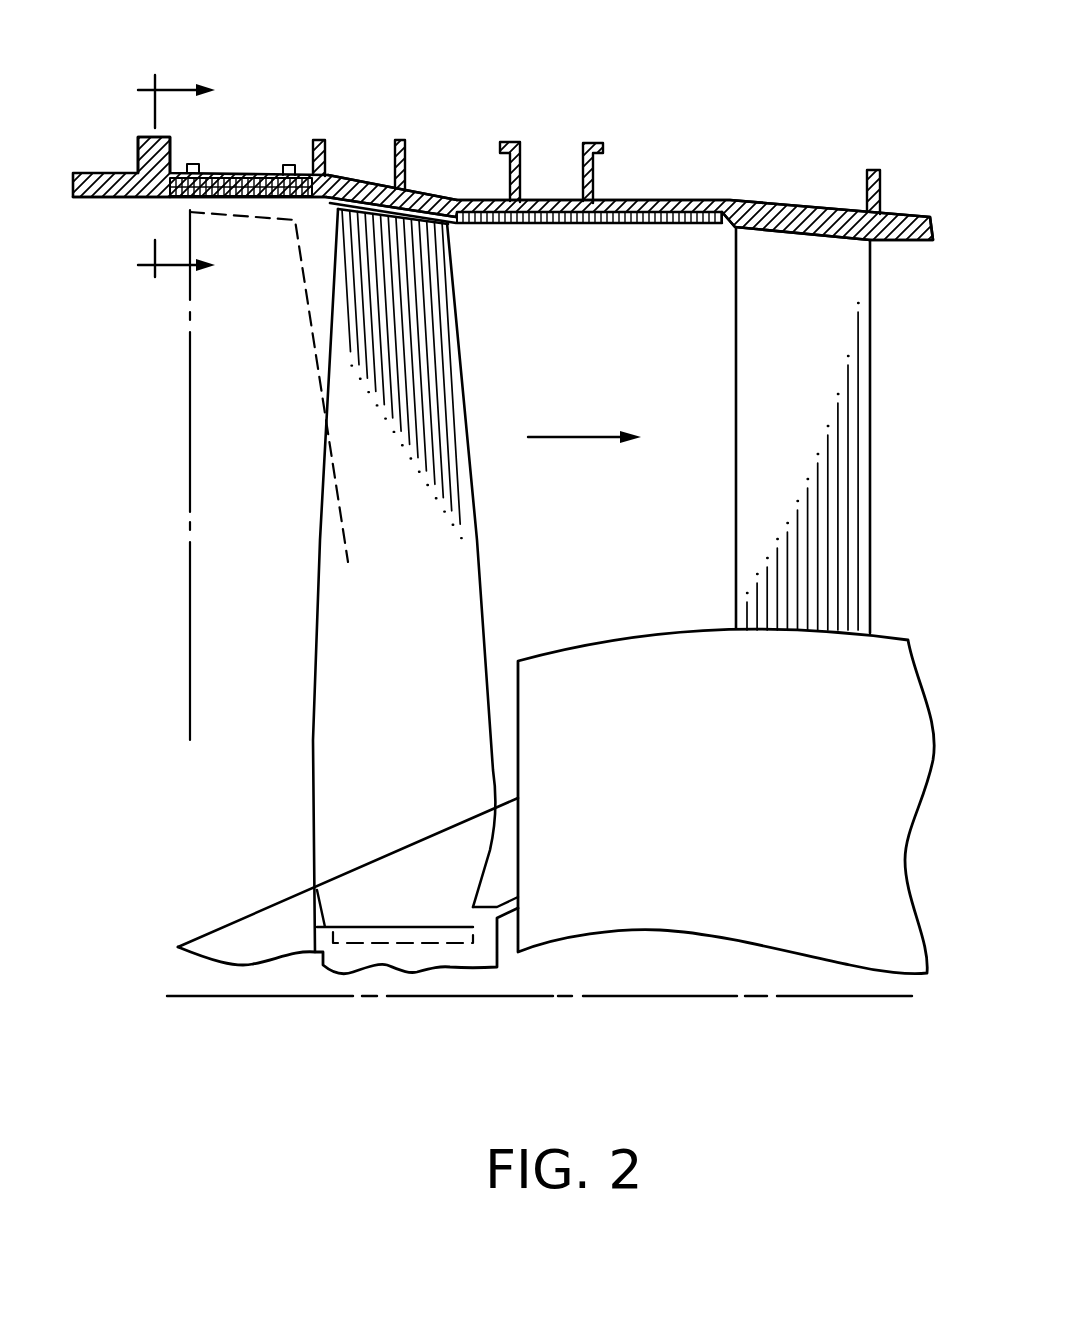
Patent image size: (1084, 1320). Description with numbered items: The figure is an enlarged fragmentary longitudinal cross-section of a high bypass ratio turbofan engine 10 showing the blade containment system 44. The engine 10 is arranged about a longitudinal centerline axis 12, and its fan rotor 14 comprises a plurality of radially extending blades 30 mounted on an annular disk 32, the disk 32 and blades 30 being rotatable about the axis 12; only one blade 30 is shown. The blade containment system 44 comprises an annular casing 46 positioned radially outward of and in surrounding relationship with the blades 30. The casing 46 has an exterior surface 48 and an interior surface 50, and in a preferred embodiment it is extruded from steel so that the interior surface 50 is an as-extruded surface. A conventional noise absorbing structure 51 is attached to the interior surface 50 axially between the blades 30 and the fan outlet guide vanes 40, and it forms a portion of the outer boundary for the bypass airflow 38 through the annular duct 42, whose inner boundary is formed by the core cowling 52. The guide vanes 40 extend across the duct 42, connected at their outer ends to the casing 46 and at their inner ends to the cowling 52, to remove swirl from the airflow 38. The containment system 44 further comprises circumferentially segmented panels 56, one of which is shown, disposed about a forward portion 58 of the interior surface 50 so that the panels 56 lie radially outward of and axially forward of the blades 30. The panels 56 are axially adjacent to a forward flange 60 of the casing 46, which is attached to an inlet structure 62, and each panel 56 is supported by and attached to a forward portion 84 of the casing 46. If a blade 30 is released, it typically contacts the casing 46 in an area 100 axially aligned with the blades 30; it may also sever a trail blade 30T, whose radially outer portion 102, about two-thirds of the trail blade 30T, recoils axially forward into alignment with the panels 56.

The turbofan engine 10 is at (610, 95).
The longitudinal centerline axis 12 is at (237, 998).
The fan rotor 14 is at (300, 835).
The blade 30 is at (458, 590).
The trail blade 30T is at (205, 625).
The annular disk 32 is at (455, 965).
The bypass airflow 38 is at (557, 437).
The fan outlet guide vane 40 is at (745, 493).
The annular duct 42 is at (644, 384).
The blade containment system 44 is at (340, 60).
The annular casing 46 is at (452, 183).
The exterior surface 48 is at (630, 197).
The interior surface 50 is at (660, 223).
The noise absorbing structure 51 is at (563, 223).
The core cowling 52 is at (662, 653).
The circumferentially segmented panel 56 is at (172, 203).
The forward portion of the interior surface 58 is at (225, 197).
The forward flange 60 is at (158, 198).
The inlet structure 62 is at (112, 172).
The forward portion of casing 84 is at (307, 170).
The area of casing 100 is at (378, 183).
The radially outer portion 102 is at (235, 407).